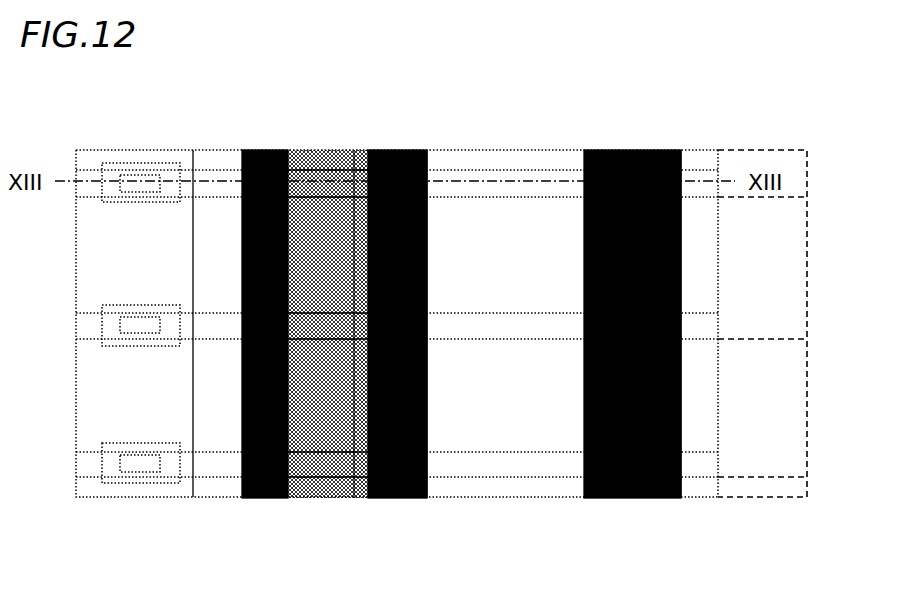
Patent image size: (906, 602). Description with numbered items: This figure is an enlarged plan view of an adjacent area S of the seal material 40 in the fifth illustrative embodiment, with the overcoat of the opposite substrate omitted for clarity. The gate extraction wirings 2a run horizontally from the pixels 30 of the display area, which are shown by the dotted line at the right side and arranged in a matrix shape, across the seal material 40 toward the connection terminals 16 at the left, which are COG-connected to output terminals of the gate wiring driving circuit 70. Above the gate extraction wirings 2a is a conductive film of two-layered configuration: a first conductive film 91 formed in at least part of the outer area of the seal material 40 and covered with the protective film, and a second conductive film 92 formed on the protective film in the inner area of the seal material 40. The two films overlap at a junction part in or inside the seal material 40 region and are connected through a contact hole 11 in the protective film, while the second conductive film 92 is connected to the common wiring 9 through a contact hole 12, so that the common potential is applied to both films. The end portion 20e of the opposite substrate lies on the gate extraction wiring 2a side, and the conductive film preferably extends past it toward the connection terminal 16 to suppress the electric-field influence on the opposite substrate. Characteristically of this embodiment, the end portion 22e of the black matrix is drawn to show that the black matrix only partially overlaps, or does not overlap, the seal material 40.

The adjacent area of seal material S is at (391, 357).
The gate extraction wiring 2a is at (702, 330).
The common wiring 9 is at (637, 150).
The contact hole 11 is at (427, 237).
The contact hole 12 is at (683, 207).
The connection terminal 16 is at (135, 165).
The end portion of opposite substrate 20e is at (263, 150).
The end portion of black matrix 22e is at (358, 150).
The pixel 30 is at (765, 435).
The seal material 40 is at (318, 163).
The gate wiring driving circuit 70 is at (193, 400).
The first conductive film 91 is at (242, 498).
The second conductive film 92 is at (378, 498).